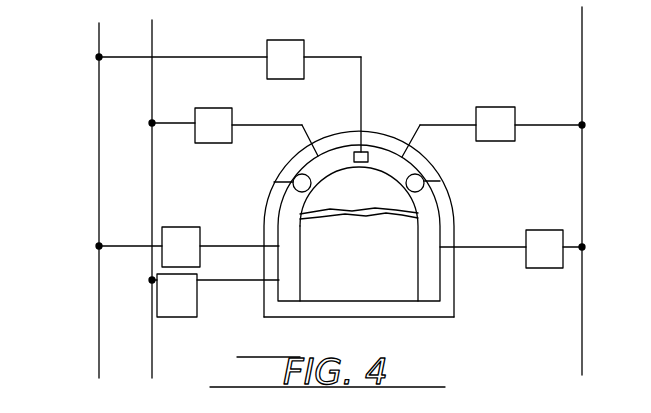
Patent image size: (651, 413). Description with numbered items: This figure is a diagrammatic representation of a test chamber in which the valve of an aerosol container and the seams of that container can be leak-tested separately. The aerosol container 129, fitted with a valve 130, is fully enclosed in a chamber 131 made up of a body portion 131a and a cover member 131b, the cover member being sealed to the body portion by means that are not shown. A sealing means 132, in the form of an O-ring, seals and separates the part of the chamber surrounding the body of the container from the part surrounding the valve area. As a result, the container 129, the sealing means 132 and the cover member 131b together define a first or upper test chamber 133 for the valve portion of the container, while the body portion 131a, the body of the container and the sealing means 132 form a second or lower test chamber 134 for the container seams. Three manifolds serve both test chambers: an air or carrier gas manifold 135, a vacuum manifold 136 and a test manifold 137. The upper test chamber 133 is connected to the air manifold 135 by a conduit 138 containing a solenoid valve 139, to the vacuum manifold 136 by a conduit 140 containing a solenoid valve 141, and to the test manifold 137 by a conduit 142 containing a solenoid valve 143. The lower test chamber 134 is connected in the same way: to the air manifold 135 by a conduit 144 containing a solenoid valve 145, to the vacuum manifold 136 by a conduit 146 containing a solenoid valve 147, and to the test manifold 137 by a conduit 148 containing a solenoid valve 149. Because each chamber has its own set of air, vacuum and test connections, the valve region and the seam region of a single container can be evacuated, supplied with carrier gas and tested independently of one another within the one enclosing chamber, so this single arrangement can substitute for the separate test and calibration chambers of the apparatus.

The aerosol container 129 is at (323, 296).
The valve 130 is at (365, 150).
The chamber 131 is at (425, 317).
The body portion 131a is at (440, 300).
The cover member 131b is at (395, 135).
The sealing means 132 is at (440, 181).
The upper test chamber 133 is at (320, 165).
The lower test chamber 134 is at (290, 289).
The air manifold 135 is at (152, 172).
The vacuum manifold 136 is at (99, 188).
The test manifold 137 is at (582, 184).
The conduit 138 is at (265, 125).
The solenoid valve 139 is at (225, 136).
The conduit 140 is at (328, 57).
The solenoid valve 141 is at (295, 69).
The conduit 142 is at (540, 125).
The solenoid valve 143 is at (506, 135).
The conduit 144 is at (206, 281).
The solenoid valve 145 is at (188, 305).
The conduit 146 is at (212, 247).
The solenoid valve 147 is at (192, 257).
The conduit 148 is at (467, 247).
The solenoid valve 149 is at (556, 259).